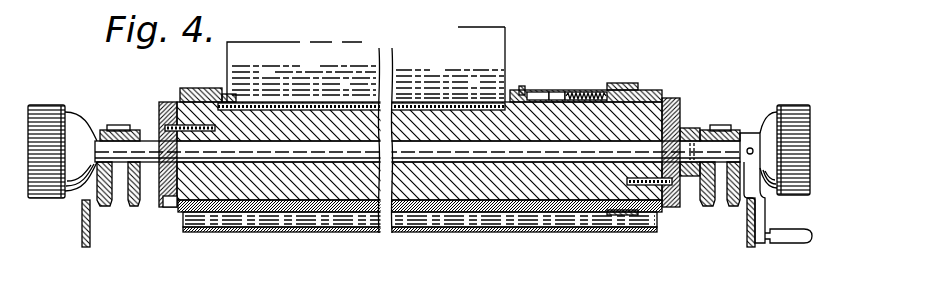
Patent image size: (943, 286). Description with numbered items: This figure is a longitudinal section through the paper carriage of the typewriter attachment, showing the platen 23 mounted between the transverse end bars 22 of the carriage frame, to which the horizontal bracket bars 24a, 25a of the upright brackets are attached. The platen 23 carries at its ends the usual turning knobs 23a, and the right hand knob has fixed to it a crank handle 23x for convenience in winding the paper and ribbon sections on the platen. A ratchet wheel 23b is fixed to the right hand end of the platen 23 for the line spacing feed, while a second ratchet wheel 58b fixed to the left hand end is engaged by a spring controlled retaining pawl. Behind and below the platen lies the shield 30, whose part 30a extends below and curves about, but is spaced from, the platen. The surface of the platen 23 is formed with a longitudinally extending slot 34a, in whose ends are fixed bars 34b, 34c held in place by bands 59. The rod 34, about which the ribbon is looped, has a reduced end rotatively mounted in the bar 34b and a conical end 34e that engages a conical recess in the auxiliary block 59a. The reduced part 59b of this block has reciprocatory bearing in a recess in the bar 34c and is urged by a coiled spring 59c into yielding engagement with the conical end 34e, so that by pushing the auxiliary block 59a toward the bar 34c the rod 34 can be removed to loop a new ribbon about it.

The transverse end bar 22 is at (125, 172).
The platen 23 is at (473, 187).
The turning knob 23a is at (795, 87).
The ratchet wheel 23b is at (681, 108).
The crank handle 23x is at (760, 218).
The horizontal bracket bar 24a is at (81, 224).
The horizontal bracket bar 25a is at (746, 234).
The shield 30 is at (328, 240).
The curved shield part 30a is at (518, 233).
The rod 34 is at (422, 97).
The longitudinal slot 34a is at (250, 72).
The bar 34b is at (194, 91).
The bar 34c is at (580, 91).
The conical end 34e is at (488, 100).
The ratchet wheel 58b is at (165, 208).
The band 59 is at (216, 91).
The auxiliary block 59a is at (526, 89).
The reduced part 59b is at (554, 93).
The coiled spring 59c is at (596, 92).